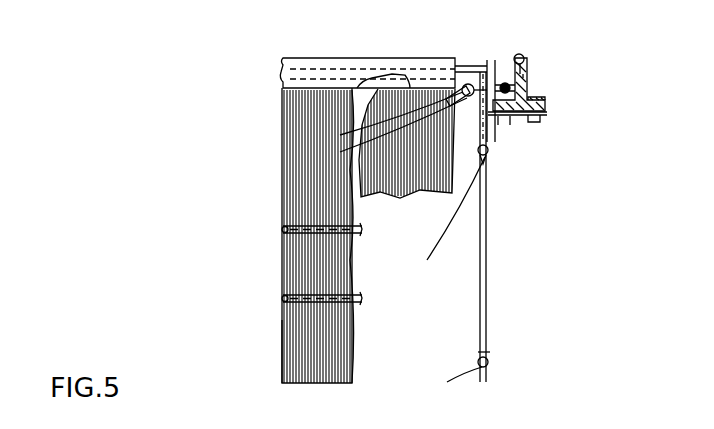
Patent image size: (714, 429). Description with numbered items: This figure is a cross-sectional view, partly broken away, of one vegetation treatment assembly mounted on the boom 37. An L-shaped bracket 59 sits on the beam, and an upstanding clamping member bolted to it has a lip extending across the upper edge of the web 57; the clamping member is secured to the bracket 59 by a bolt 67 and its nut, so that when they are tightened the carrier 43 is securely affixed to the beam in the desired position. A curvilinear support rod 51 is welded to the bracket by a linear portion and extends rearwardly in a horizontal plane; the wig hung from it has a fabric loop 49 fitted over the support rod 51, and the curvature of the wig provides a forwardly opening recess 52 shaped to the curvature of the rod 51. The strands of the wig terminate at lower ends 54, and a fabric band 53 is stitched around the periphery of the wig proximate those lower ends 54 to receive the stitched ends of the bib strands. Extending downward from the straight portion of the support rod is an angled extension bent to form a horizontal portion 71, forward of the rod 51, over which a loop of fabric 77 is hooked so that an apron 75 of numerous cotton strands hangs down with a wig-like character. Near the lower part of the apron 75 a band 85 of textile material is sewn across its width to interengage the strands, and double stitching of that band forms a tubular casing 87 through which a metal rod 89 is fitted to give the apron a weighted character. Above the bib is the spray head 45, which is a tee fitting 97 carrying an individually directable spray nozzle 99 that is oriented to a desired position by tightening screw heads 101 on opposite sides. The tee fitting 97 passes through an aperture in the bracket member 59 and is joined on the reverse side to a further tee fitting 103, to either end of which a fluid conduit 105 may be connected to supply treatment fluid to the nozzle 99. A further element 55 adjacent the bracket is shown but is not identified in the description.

The fabric loop 49 is at (281, 86).
The forwardly opening recess 52 is at (405, 323).
The curvilinear support rod 51 is at (471, 60).
The boom 37 is at (497, 58).
The carrier 43 is at (517, 56).
The further tee fitting 103 is at (520, 60).
The fluid conduit 105 is at (523, 70).
The web 57 is at (510, 85).
The bolt 67 is at (534, 120).
The mounting plate 55 is at (510, 116).
The L-shaped bracket 59 is at (498, 116).
The spray nozzle 99 is at (455, 90).
The screw heads 101 is at (450, 65).
The spray head 45 is at (340, 135).
The tee fitting 97 is at (340, 152).
The horizontal portion 71 is at (480, 156).
The loop of fabric 77 is at (444, 218).
The apron 75 is at (487, 288).
The tubular casing 87 is at (484, 360).
The band 85 is at (489, 354).
The metal rod 89 is at (447, 384).
The fabric band 53 is at (282, 300).
The lower ends of the cotton strands 54 is at (282, 342).